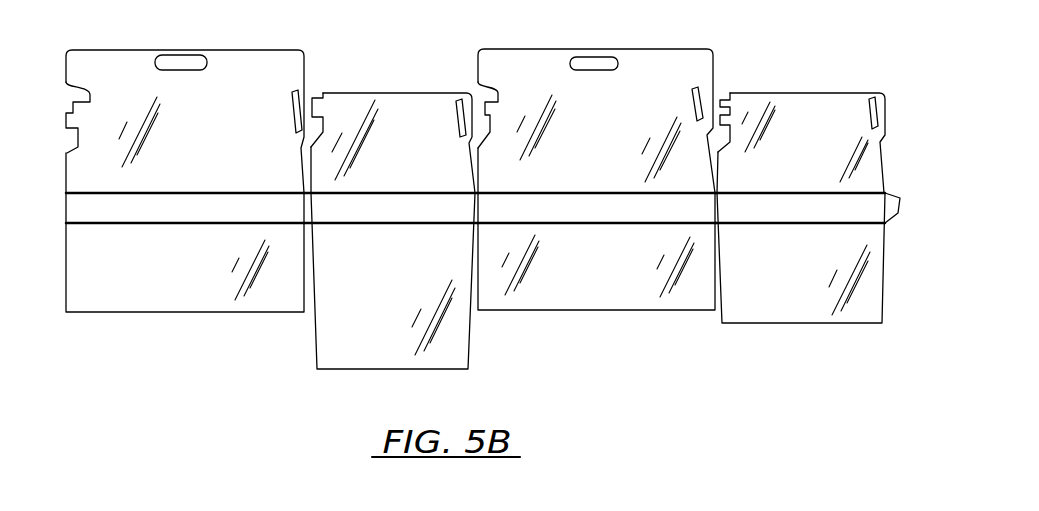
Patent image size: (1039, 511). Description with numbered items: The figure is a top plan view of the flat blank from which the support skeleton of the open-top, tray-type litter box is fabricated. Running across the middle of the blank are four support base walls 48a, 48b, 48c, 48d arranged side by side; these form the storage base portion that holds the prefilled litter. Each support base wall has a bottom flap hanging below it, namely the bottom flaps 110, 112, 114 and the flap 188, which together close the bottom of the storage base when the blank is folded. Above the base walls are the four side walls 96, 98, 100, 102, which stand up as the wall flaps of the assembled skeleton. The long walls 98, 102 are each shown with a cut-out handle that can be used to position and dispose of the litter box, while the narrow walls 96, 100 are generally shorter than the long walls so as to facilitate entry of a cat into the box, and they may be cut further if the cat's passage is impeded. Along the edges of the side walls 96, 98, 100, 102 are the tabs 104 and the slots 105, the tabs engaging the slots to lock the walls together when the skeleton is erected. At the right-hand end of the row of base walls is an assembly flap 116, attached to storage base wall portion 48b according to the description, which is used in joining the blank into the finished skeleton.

The wall flap 102 is at (214, 132).
The wall flap 96 is at (425, 149).
The wall flap 98 is at (612, 145).
The wall flap 100 is at (817, 153).
The tab 104 is at (70, 113).
The slot 105 is at (292, 100).
The support base wall 48a is at (157, 219).
The support base wall 48b is at (368, 220).
The support base wall 48c is at (567, 219).
The support base wall 48d is at (805, 219).
The bottom panel 188 is at (157, 276).
The bottom flap 110 is at (403, 281).
The bottom flap 112 is at (605, 277).
The bottom flap 114 is at (805, 279).
The assembly flap 116 is at (892, 211).